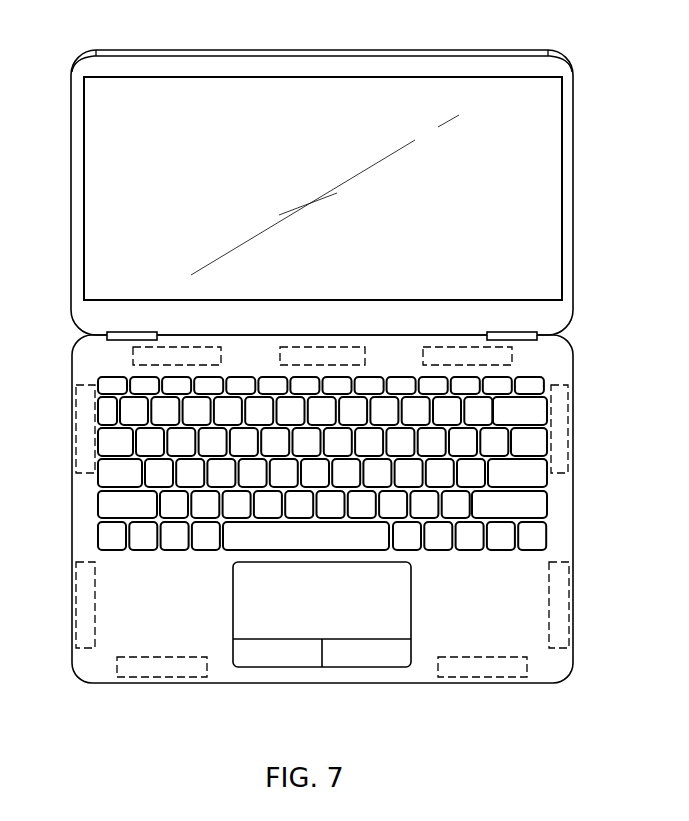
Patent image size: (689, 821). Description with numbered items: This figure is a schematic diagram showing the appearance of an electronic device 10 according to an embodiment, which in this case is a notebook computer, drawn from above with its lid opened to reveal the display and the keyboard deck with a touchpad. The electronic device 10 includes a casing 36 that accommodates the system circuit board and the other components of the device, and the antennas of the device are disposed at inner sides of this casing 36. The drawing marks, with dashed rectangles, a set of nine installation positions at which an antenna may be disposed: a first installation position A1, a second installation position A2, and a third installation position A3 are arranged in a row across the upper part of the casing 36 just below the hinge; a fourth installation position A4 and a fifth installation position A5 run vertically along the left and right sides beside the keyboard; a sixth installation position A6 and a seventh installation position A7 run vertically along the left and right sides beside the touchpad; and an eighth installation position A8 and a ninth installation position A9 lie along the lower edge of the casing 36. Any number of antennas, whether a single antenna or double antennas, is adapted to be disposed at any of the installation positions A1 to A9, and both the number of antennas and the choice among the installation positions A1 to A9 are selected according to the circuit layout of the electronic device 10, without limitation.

The electronic device 10 is at (49, 58).
The casing 36 is at (562, 506).
The installation position A1 is at (132, 349).
The installation position A2 is at (365, 347).
The installation position A3 is at (512, 352).
The installation position A4 is at (75, 429).
The installation position A5 is at (569, 428).
The installation position A6 is at (75, 603).
The installation position A7 is at (569, 601).
The installation position A8 is at (160, 678).
The installation position A9 is at (481, 678).